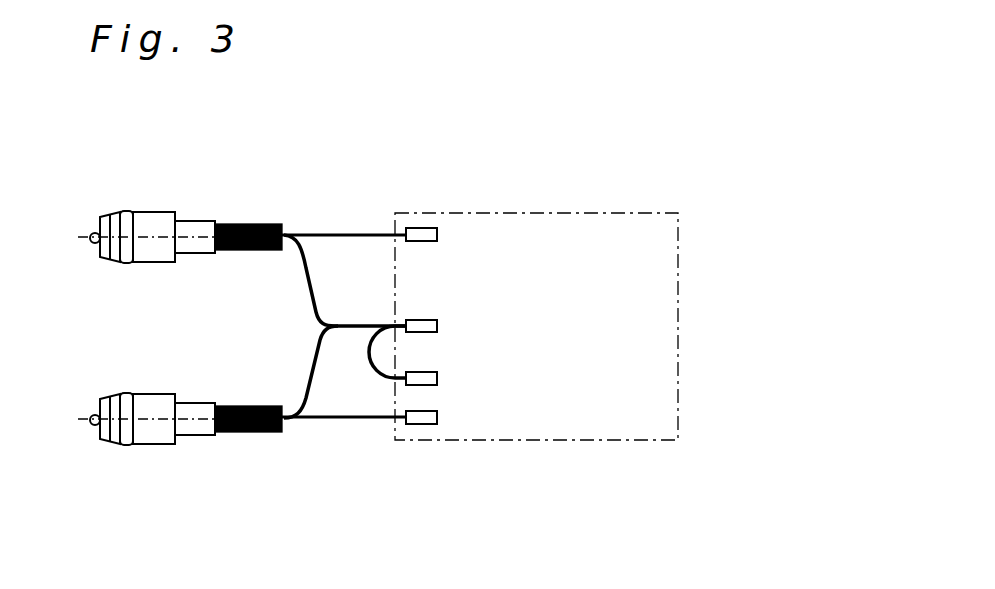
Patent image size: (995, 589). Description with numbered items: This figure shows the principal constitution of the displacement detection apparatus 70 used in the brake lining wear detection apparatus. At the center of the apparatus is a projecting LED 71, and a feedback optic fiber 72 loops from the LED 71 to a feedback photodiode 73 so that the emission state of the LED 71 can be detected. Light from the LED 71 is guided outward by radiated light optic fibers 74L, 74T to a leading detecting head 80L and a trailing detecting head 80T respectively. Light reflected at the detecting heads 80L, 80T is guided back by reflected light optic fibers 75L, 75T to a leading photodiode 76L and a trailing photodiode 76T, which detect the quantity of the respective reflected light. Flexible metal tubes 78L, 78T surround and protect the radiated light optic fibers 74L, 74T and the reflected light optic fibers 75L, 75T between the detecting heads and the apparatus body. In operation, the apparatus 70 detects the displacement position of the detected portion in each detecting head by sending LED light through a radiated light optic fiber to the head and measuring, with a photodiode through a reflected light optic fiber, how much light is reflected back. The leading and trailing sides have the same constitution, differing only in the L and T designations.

The displacement detection apparatus 70 is at (503, 100).
The projecting LED 71 is at (436, 318).
The feedback optic fiber 72 is at (372, 362).
The feedback photodiode 73 is at (440, 372).
The radiated light optic fiber 74L is at (320, 288).
The radiated light optic fiber 74T is at (313, 380).
The reflected light optic fiber 75L is at (345, 233).
The reflected light optic fiber 75T is at (363, 420).
The leading photodiode 76L is at (430, 226).
The trailing photodiode 76T is at (432, 425).
The flexible metal tube 78L is at (254, 222).
The flexible metal tube 78T is at (228, 407).
The leading detecting head 80L is at (155, 199).
The trailing detecting head 80T is at (156, 394).